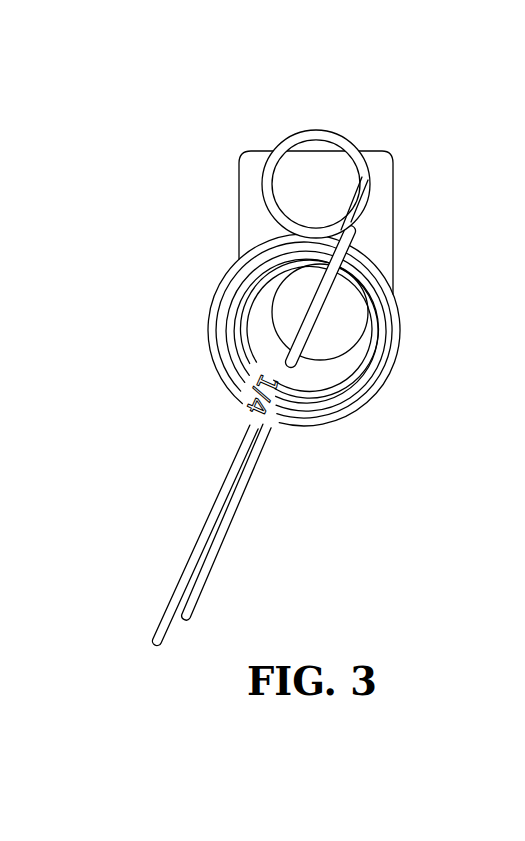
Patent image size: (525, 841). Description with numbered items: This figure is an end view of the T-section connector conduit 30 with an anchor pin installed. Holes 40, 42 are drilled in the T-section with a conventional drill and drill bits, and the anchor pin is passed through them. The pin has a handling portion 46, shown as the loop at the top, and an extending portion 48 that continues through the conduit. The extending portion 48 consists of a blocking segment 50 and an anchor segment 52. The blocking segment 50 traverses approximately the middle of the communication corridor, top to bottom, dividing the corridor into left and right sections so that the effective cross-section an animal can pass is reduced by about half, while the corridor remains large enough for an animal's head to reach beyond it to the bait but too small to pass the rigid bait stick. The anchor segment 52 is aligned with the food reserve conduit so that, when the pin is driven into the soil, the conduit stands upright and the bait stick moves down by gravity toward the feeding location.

The connector conduit 30 is at (415, 174).
The hole 40 is at (348, 236).
The hole 42 is at (290, 385).
The handling portion 46 is at (323, 129).
The extending portion 48 is at (203, 534).
The blocking segment 50 is at (311, 314).
The anchor segment 52 is at (216, 551).